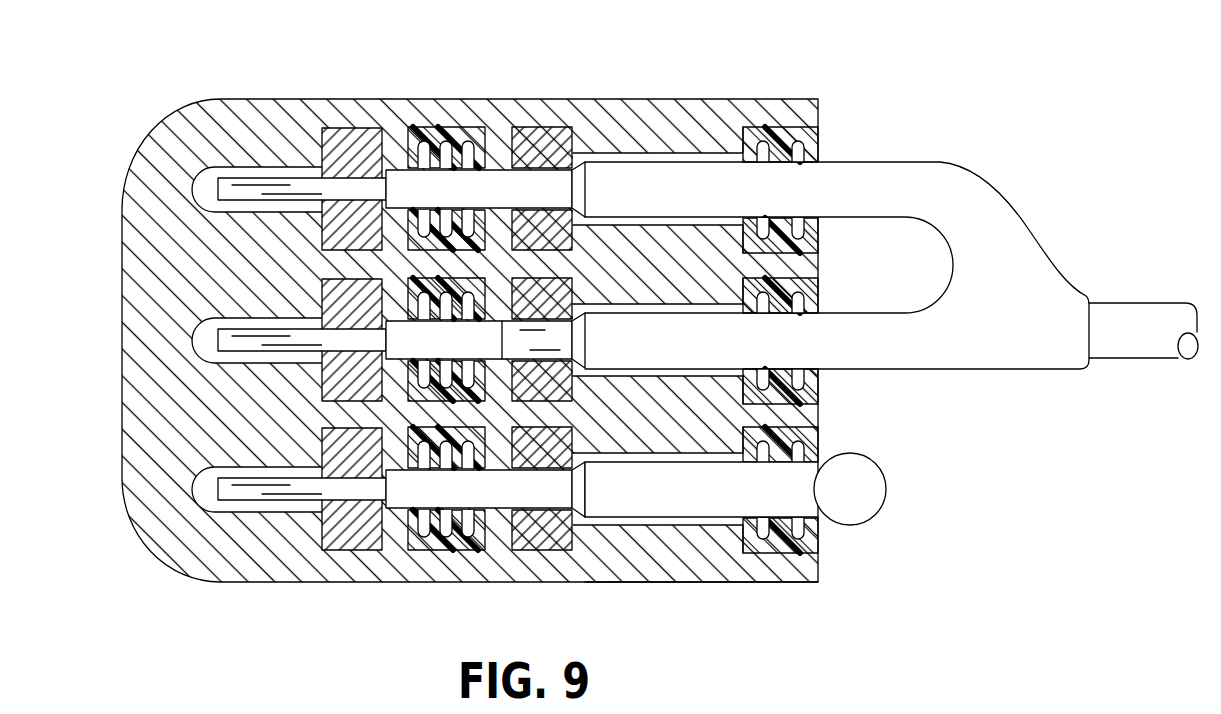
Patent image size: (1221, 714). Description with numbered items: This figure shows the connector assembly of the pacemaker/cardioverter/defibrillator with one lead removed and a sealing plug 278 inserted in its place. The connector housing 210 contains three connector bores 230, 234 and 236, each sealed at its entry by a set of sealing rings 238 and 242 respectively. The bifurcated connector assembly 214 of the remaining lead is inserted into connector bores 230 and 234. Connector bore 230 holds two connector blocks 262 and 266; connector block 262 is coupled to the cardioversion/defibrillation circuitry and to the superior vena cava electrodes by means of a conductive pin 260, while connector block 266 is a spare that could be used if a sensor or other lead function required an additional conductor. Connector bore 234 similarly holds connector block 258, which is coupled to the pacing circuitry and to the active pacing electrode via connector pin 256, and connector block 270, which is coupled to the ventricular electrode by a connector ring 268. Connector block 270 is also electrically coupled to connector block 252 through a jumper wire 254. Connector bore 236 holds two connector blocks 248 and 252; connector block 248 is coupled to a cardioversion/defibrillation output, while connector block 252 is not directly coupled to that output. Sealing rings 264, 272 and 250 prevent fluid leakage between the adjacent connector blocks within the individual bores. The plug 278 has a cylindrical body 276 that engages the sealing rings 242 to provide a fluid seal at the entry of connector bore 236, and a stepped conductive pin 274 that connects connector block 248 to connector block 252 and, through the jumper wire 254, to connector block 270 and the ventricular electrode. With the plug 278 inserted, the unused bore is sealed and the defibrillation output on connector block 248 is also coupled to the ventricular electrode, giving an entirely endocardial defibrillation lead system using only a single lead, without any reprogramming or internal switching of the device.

The connector housing 210 is at (753, 108).
The bifurcated connector assembly 214 is at (1003, 240).
The connector bore 230 is at (637, 145).
The connector bore 234 is at (690, 377).
The connector bore 236 is at (668, 535).
The sealing rings 238 is at (810, 148).
The sealing rings 242 is at (807, 533).
The connector block 248 is at (355, 540).
The sealing ring 250 is at (440, 540).
The connector block 252 is at (555, 545).
The jumper wire 254 is at (540, 402).
The connector pin 256 is at (230, 342).
The connector block 258 is at (343, 297).
The conductive pin 260 is at (263, 190).
The connector block 262 is at (325, 135).
The sealing ring 264 is at (440, 135).
The connector block 266 is at (562, 130).
The connector ring 268 is at (480, 248).
The connector block 270 is at (542, 278).
The sealing ring 272 is at (455, 398).
The stepped conductive pin 274 is at (240, 497).
The cylindrical body 276 is at (695, 500).
The sealing plug 278 is at (870, 495).